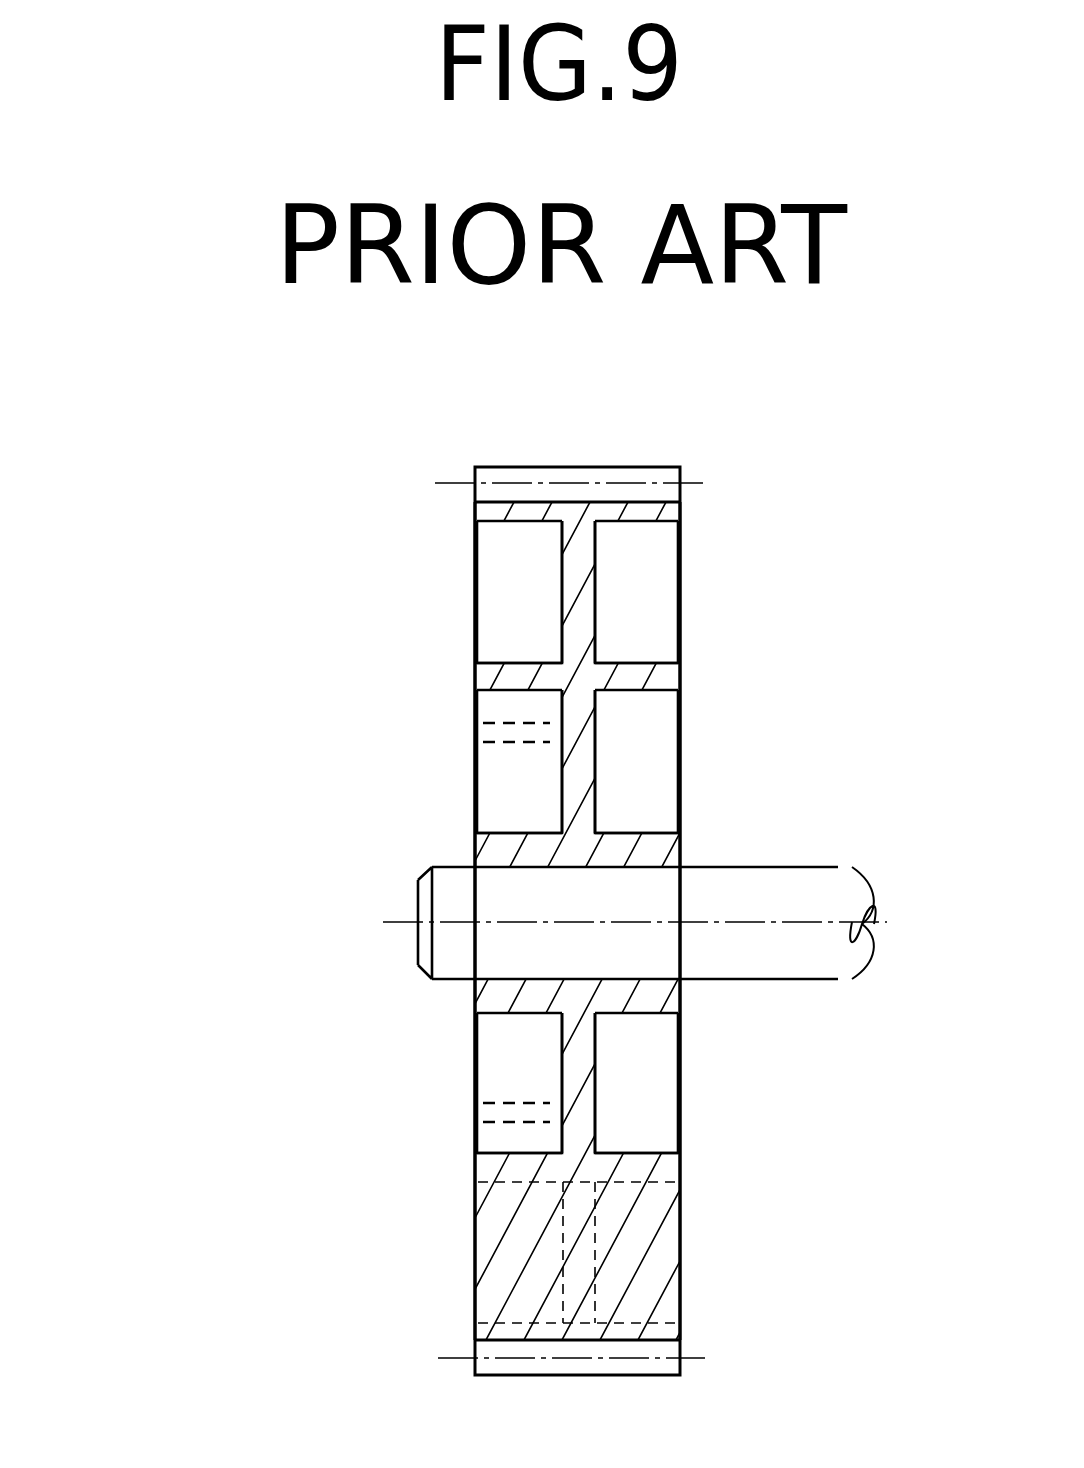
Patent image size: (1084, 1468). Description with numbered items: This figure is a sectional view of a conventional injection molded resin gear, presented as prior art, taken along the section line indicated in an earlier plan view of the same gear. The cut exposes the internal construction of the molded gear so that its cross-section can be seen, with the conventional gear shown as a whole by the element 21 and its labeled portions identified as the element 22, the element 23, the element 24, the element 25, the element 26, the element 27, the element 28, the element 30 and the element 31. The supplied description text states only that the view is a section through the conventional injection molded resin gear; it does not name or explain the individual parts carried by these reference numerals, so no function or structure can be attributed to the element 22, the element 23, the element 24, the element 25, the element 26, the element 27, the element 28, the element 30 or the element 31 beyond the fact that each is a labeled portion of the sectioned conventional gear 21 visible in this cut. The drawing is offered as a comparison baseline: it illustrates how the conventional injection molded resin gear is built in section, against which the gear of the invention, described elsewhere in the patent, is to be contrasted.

The gear 21 is at (703, 540).
The rim 22 is at (563, 467).
The rim inner portion 23 is at (474, 545).
The shaft 24 is at (777, 867).
The hub 25 is at (681, 800).
The web 26 is at (562, 605).
The partition wall 27 is at (681, 635).
The side wall 28 is at (681, 720).
The recess 30 is at (681, 585).
The hole 31 is at (475, 745).